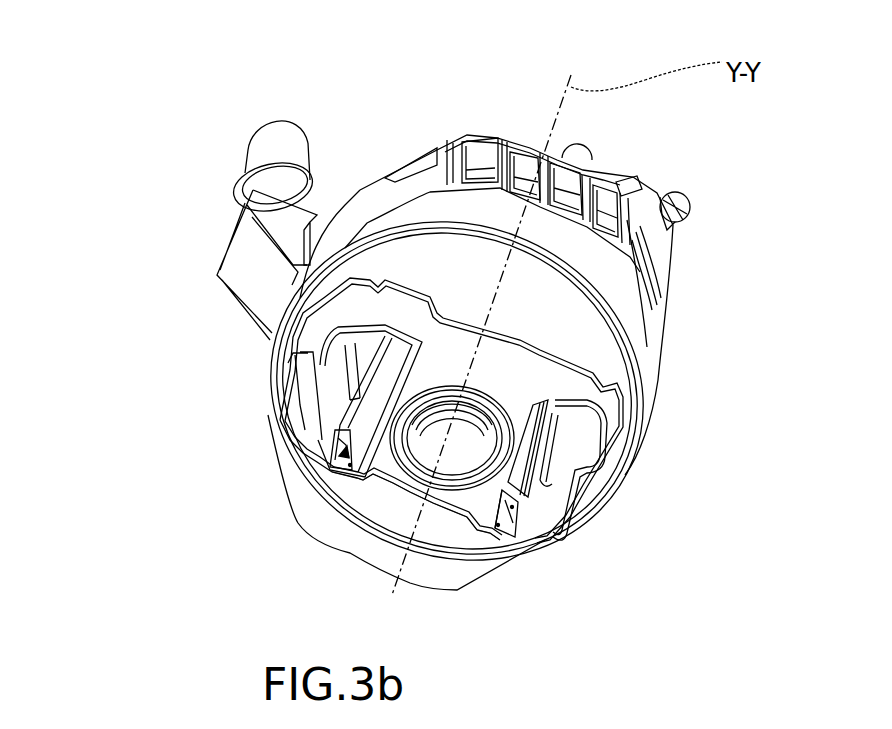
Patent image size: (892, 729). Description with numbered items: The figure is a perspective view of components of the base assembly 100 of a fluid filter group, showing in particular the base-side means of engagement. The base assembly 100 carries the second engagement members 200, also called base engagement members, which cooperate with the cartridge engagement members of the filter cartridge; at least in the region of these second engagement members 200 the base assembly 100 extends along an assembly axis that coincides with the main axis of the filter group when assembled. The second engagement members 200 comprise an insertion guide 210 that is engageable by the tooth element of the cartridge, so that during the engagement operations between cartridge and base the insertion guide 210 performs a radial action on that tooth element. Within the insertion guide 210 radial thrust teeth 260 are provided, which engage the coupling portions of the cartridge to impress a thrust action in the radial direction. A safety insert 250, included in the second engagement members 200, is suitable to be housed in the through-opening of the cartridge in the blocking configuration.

The base assembly 100 is at (370, 76).
The second engagement members 200 is at (264, 387).
The safety insert 250 is at (341, 363).
The radial thrust teeth 260 is at (320, 472).
The insertion guide 210 is at (343, 483).